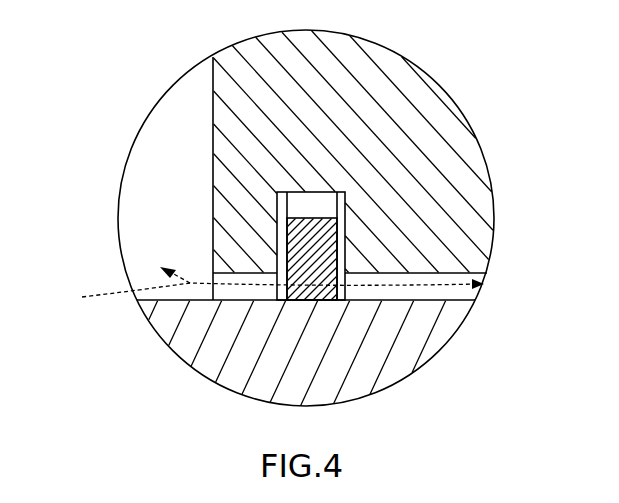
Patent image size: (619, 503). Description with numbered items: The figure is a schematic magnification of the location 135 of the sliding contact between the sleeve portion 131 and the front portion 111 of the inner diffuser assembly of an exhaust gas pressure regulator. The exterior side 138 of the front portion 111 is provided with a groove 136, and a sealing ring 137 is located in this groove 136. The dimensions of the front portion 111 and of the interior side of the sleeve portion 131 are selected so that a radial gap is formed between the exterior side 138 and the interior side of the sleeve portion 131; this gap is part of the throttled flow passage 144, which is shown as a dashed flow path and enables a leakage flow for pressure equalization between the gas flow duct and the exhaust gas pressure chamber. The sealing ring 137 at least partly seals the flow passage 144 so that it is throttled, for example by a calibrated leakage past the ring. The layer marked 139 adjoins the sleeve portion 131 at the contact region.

The location of the sliding contact 135 is at (128, 98).
The front portion 111 is at (412, 93).
The sleeve portion 131 is at (375, 358).
The groove 136 is at (293, 194).
The sealing ring 137 is at (320, 237).
The exterior side 138 is at (438, 284).
The second layer 139 is at (408, 296).
The throttled flow passage 144 is at (258, 290).